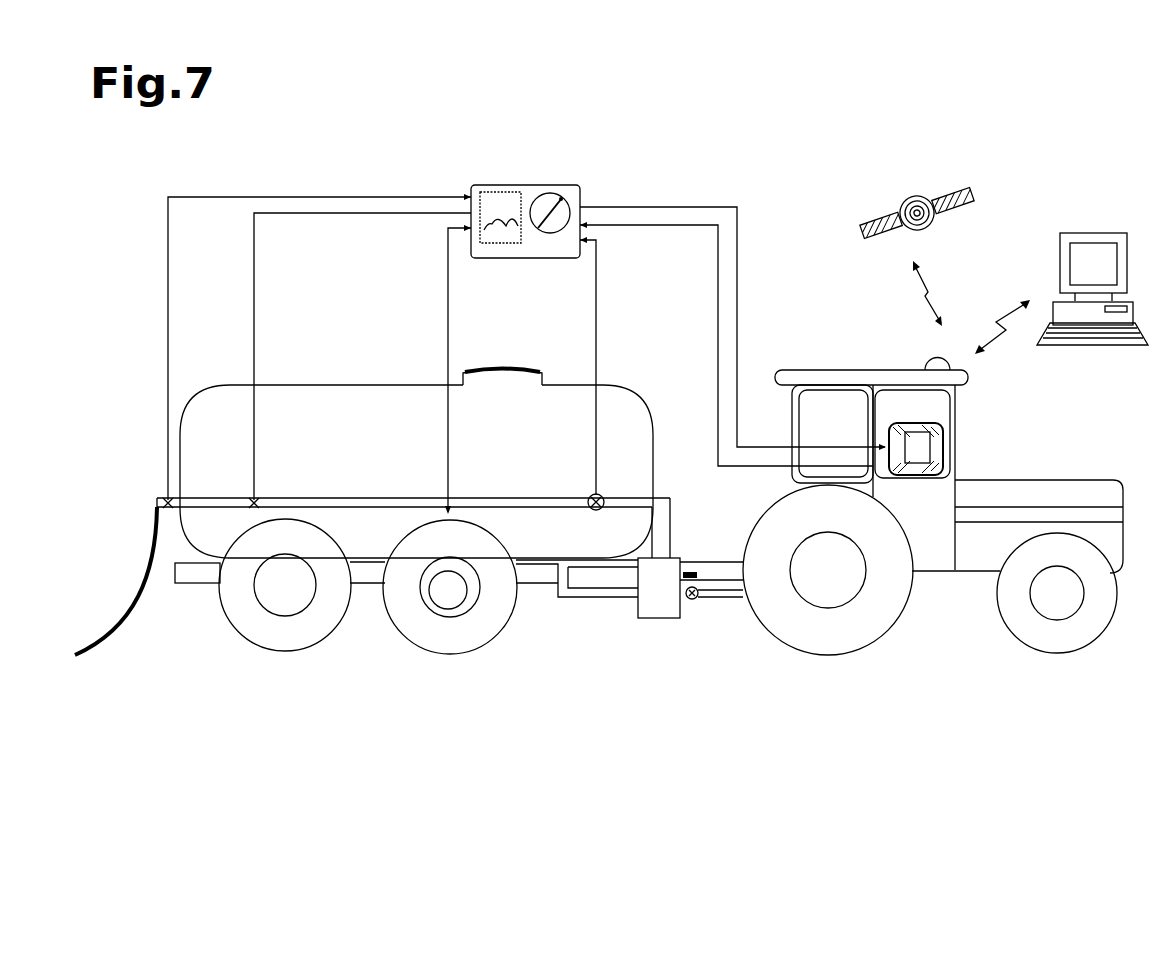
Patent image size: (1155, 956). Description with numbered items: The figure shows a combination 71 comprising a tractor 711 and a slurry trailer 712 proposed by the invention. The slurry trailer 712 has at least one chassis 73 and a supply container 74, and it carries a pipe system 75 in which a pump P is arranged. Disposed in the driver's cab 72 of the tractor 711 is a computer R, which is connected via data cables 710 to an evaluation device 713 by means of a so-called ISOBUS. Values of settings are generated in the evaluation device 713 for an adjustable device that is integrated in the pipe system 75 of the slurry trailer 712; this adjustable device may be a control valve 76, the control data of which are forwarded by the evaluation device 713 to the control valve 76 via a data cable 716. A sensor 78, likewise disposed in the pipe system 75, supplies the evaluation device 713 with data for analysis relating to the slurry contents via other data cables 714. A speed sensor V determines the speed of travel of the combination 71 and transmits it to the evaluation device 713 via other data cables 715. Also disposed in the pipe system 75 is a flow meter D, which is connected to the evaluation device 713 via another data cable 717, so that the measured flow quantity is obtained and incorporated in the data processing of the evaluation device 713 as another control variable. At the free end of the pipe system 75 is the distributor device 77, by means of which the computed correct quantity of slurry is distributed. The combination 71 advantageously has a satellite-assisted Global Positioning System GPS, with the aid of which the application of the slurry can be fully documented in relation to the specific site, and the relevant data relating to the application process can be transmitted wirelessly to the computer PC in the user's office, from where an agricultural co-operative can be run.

The evaluation device 713 is at (503, 194).
The data cable 717 is at (168, 318).
The data cable 716 is at (256, 320).
The data cable 715 is at (450, 317).
The data cable 714 is at (598, 317).
The data cable 710 is at (718, 293).
The supply container 74 is at (368, 383).
The slurry trailer 712 is at (542, 489).
The flow meter D is at (166, 500).
The control valve 76 is at (252, 500).
The distributor device 77 is at (140, 600).
The speed sensor V is at (448, 597).
The chassis 73 is at (540, 578).
The pipe system 75 is at (673, 500).
The sensor 78 is at (593, 512).
The pump P is at (657, 607).
The combination 71 is at (908, 543).
The tractor 711 is at (963, 568).
The driver's cab 72 is at (892, 405).
The computer R is at (915, 440).
The Global Positioning System GPS is at (930, 294).
The office computer PC is at (1073, 238).